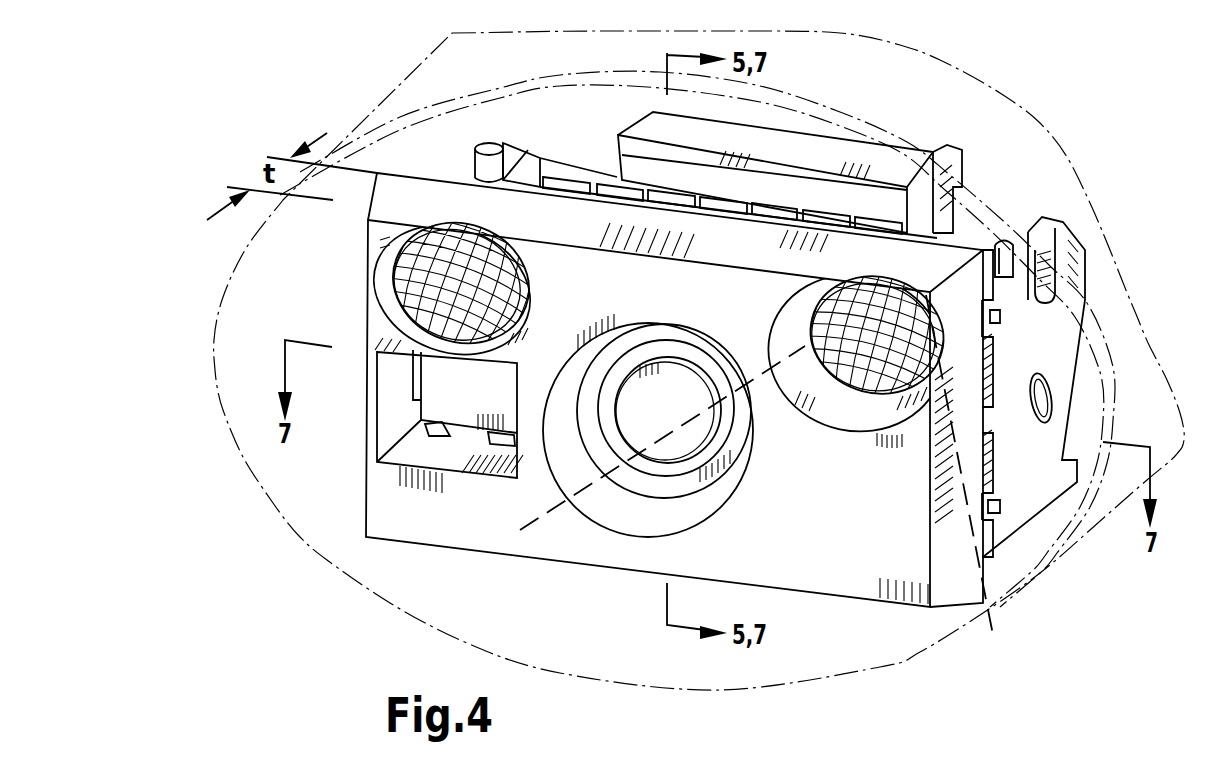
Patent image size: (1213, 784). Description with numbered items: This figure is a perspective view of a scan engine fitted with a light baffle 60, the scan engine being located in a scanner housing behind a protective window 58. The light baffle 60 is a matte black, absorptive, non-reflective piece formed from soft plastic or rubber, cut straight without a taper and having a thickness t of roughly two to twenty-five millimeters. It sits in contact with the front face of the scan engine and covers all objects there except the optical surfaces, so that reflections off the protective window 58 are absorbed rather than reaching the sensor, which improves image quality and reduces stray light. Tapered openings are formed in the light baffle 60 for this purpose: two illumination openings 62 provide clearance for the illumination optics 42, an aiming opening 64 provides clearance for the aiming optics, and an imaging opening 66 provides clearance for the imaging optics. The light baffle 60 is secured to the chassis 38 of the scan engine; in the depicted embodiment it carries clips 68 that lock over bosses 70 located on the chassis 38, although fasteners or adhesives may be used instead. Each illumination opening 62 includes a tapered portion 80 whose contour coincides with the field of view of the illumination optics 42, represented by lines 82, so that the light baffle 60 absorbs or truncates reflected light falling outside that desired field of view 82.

The chassis 38 is at (1073, 263).
The illumination optics 42 is at (892, 320).
The protective window 58 is at (433, 587).
The light baffle 60 is at (942, 580).
The illumination opening 62 is at (522, 328).
The aiming opening 64 is at (437, 445).
The imaging opening 66 is at (660, 518).
The clip 68 is at (997, 303).
The boss 70 is at (1000, 315).
The tapered portion 80 is at (393, 317).
The field of view lines 82 is at (757, 382).